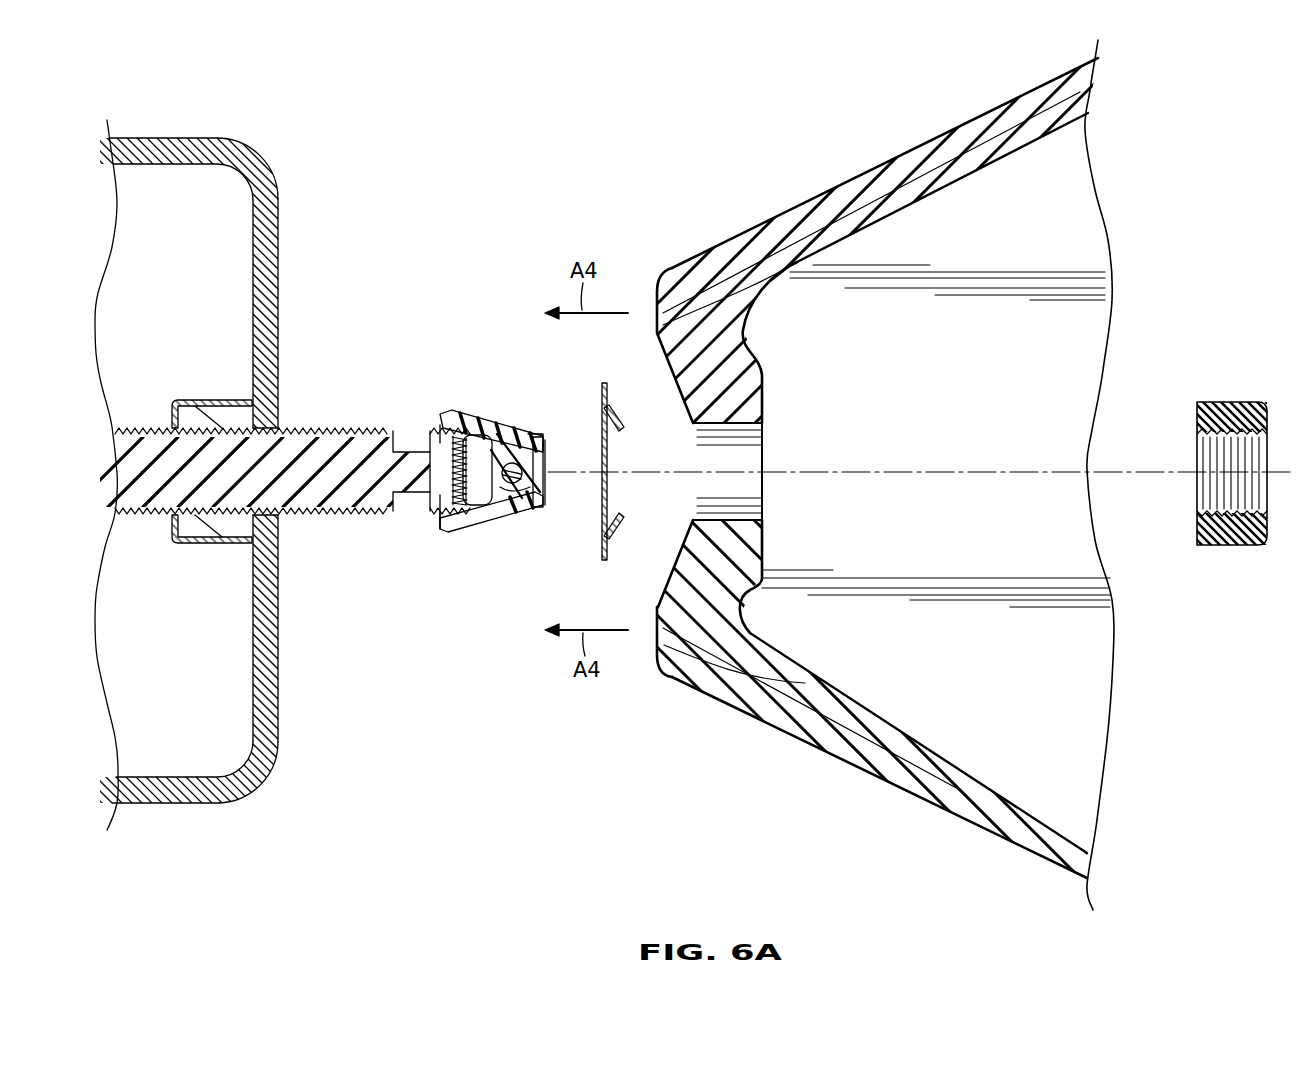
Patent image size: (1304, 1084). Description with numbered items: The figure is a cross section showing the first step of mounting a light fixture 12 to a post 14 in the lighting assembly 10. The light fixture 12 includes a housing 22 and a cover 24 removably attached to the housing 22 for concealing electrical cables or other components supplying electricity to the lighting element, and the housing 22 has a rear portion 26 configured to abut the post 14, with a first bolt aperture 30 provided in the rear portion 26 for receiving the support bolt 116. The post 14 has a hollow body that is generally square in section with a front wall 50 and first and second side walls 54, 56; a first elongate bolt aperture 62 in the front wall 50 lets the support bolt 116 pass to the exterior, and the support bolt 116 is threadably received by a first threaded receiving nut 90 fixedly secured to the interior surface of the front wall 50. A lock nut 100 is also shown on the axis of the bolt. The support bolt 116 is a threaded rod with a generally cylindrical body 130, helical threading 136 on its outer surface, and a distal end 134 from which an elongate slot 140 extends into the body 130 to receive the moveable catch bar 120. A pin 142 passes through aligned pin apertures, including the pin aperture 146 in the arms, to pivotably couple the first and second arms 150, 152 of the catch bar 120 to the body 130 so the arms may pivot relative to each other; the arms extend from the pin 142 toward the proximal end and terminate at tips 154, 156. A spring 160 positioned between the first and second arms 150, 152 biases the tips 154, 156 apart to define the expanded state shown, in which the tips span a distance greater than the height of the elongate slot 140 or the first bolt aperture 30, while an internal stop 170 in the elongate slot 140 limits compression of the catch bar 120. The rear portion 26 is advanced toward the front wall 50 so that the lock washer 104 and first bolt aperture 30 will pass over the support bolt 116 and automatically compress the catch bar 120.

The lighting assembly 10 is at (638, 99).
The light fixture 12 is at (916, 132).
The post 14 is at (143, 124).
The housing 22 is at (876, 169).
The cover 24 is at (904, 336).
The rear portion 26 is at (656, 292).
The first bolt aperture 30 is at (762, 518).
The front wall 50 is at (278, 252).
The first side wall 54 is at (168, 790).
The second side wall 56 is at (182, 142).
The first elongate bolt aperture 62 is at (297, 510).
The first threaded receiving nut 90 is at (210, 410).
The lock nut 100 is at (1247, 547).
The lock washer 104 is at (613, 400).
The support bolt 116 is at (343, 426).
The moveable catch bar 120 is at (550, 456).
The body 130 is at (303, 482).
The distal end 134 is at (546, 506).
The helical threading 136 is at (308, 428).
The elongate slot 140 is at (400, 438).
The pin 142 is at (528, 434).
The pin aperture 146 is at (511, 484).
The first arm 150 is at (493, 425).
The second arm 152 is at (476, 525).
The tip 154 is at (462, 438).
The tip 156 is at (450, 528).
The spring 160 is at (452, 450).
The internal stop 170 is at (440, 518).